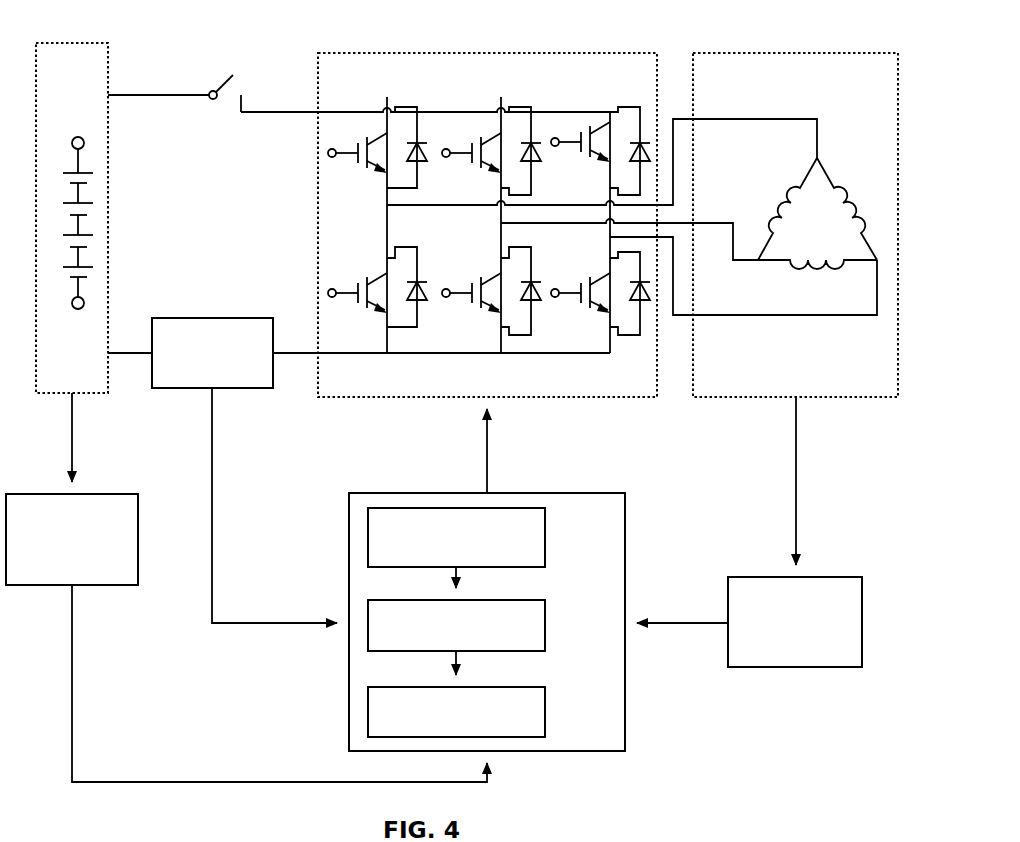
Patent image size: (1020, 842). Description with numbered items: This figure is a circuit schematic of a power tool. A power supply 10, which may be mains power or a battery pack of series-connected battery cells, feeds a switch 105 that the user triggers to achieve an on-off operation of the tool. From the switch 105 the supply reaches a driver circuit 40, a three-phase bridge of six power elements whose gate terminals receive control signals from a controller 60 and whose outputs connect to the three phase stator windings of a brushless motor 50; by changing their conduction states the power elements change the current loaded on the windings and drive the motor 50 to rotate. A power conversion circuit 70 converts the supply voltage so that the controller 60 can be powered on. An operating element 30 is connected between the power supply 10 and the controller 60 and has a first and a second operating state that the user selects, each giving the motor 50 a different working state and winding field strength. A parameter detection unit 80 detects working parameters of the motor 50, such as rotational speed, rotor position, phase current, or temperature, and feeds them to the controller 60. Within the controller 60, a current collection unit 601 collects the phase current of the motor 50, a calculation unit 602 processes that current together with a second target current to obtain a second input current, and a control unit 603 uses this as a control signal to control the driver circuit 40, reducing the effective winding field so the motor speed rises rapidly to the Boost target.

The power supply 10 is at (75, 43).
The switch 105 is at (207, 77).
The driver circuit 40 is at (485, 53).
The motor 50 is at (793, 53).
The operating element 30 is at (213, 318).
The power conversion circuit 70 is at (103, 492).
The controller 60 is at (487, 580).
The current collection unit 601 is at (545, 540).
The calculation unit 602 is at (545, 620).
The control unit 603 is at (545, 708).
The parameter detection unit 80 is at (862, 616).